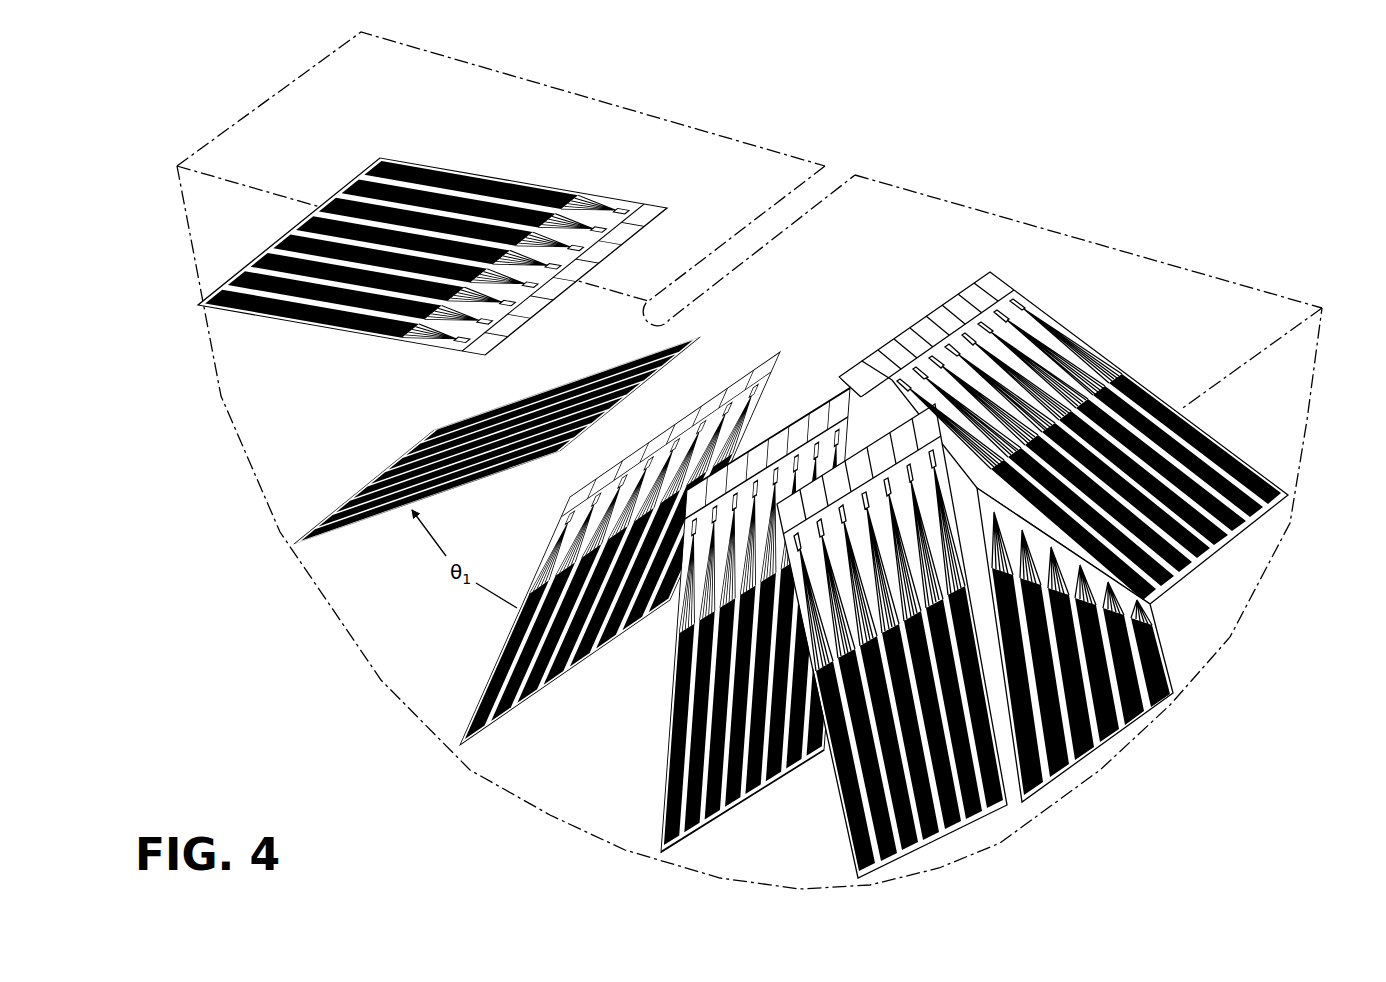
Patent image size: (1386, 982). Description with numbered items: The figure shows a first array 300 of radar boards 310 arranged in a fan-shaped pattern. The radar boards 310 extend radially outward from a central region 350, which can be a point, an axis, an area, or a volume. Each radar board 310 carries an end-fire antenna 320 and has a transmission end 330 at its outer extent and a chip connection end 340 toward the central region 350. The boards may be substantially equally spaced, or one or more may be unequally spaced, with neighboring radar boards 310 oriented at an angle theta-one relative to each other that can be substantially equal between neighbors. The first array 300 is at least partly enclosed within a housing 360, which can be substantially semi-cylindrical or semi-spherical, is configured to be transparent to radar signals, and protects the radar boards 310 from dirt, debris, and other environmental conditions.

The first array 300 is at (1298, 86).
The radar board 310 is at (296, 334).
The end-fire antenna 320 is at (234, 263).
The transmission end 330 is at (344, 164).
The chip connection end 340 is at (670, 232).
The central region 350 is at (856, 150).
The housing 360 is at (1278, 292).